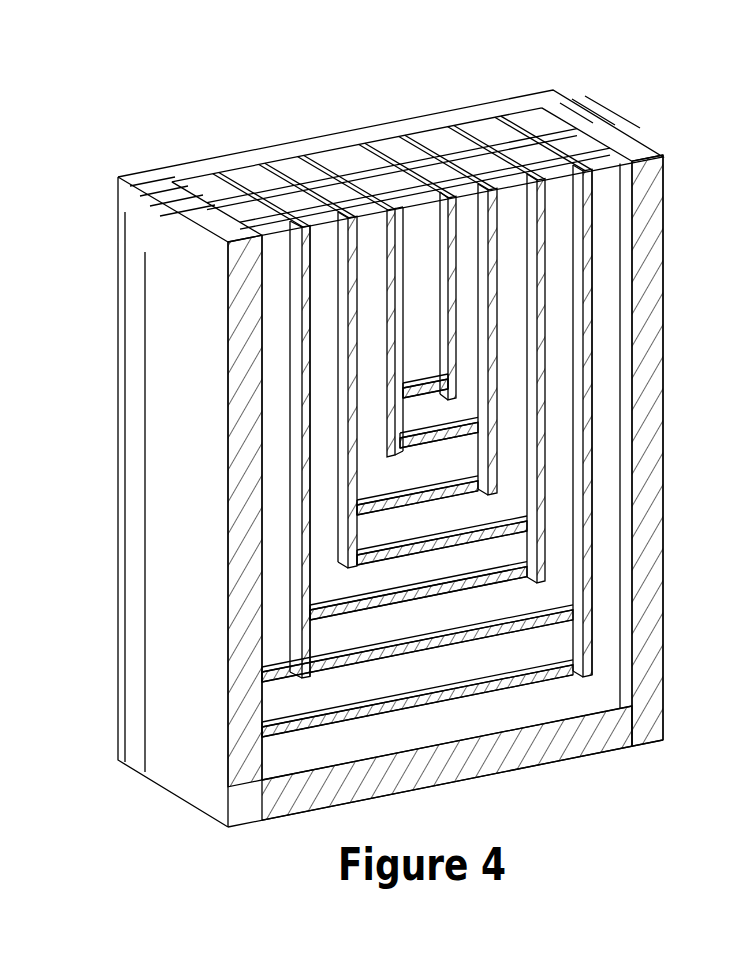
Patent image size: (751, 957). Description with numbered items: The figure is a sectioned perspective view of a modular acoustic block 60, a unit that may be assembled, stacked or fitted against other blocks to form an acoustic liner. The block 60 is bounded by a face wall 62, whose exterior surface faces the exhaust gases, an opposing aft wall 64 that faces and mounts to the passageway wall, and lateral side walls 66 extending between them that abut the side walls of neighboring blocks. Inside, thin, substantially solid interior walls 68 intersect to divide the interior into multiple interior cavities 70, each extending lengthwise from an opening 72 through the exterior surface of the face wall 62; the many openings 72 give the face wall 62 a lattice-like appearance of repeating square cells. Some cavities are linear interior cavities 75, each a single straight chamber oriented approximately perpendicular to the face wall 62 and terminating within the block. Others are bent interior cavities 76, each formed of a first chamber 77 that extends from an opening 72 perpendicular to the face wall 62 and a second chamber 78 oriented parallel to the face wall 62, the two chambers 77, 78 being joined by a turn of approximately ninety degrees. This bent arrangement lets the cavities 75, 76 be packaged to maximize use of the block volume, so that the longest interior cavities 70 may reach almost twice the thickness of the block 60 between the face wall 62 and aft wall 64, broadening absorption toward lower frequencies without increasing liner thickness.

The modular acoustic block 60 is at (178, 73).
The face wall 62 is at (331, 140).
The aft wall 64 is at (295, 790).
The side wall 66 is at (652, 360).
The interior wall 68 is at (590, 243).
The interior cavity 70 is at (613, 205).
The opening 72 is at (263, 192).
The linear interior cavity 75 is at (430, 257).
The bent interior cavity 76 is at (607, 510).
The first chamber 77 is at (612, 588).
The second chamber 78 is at (500, 708).